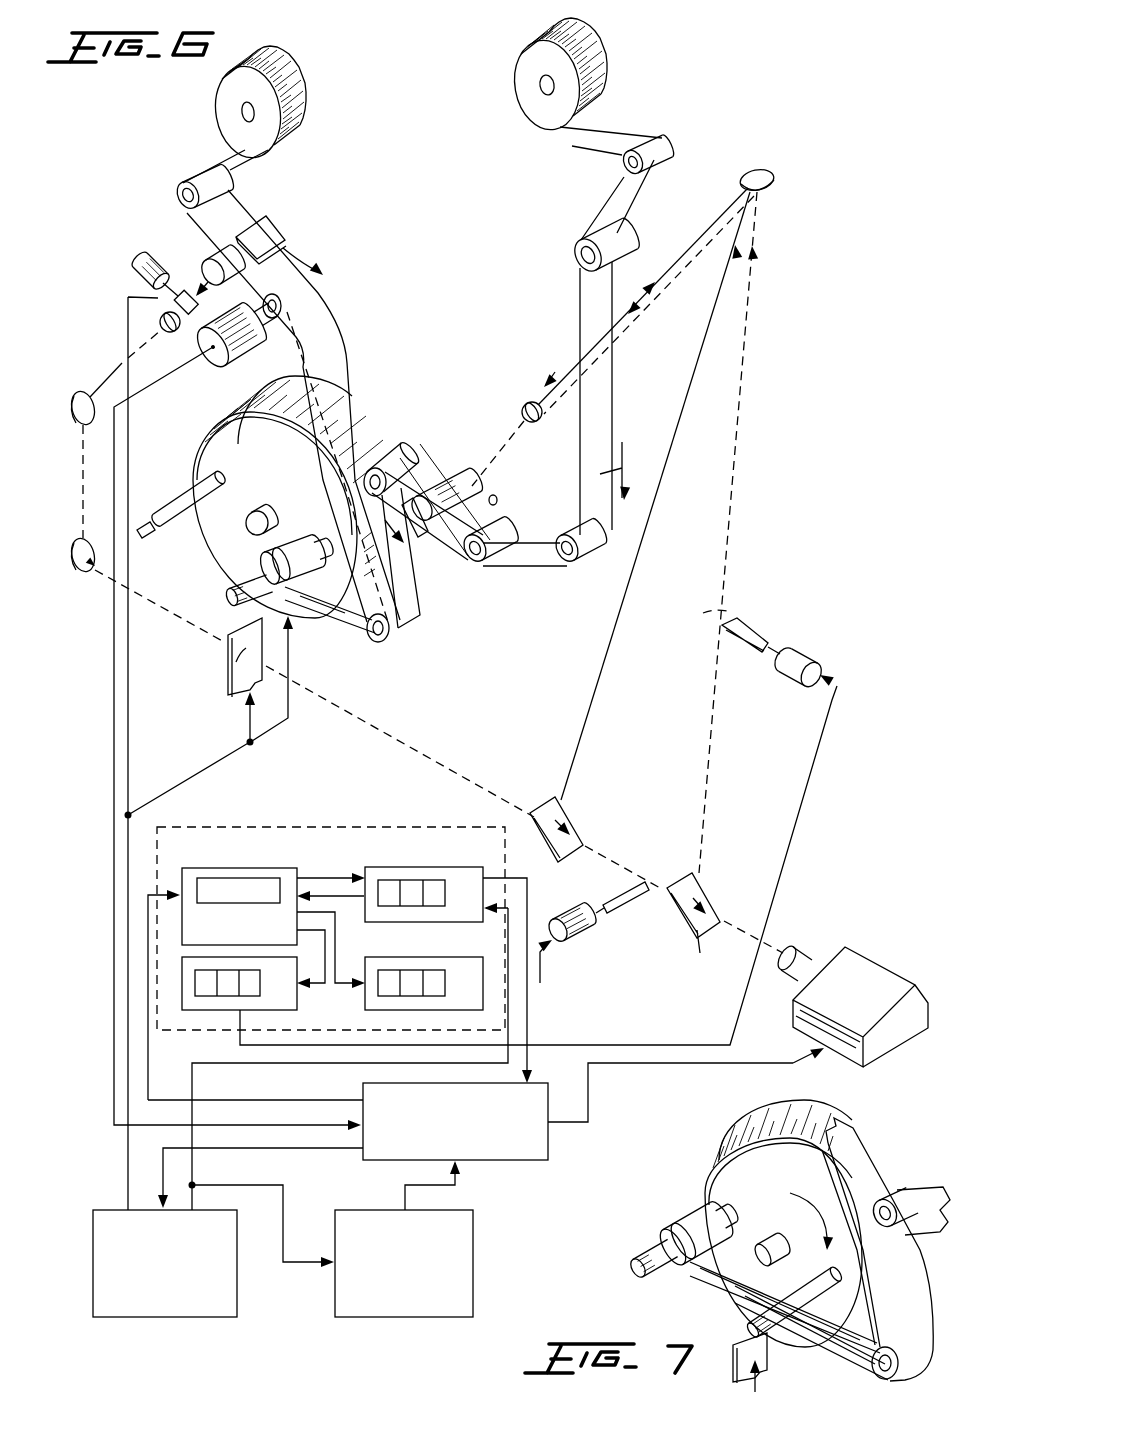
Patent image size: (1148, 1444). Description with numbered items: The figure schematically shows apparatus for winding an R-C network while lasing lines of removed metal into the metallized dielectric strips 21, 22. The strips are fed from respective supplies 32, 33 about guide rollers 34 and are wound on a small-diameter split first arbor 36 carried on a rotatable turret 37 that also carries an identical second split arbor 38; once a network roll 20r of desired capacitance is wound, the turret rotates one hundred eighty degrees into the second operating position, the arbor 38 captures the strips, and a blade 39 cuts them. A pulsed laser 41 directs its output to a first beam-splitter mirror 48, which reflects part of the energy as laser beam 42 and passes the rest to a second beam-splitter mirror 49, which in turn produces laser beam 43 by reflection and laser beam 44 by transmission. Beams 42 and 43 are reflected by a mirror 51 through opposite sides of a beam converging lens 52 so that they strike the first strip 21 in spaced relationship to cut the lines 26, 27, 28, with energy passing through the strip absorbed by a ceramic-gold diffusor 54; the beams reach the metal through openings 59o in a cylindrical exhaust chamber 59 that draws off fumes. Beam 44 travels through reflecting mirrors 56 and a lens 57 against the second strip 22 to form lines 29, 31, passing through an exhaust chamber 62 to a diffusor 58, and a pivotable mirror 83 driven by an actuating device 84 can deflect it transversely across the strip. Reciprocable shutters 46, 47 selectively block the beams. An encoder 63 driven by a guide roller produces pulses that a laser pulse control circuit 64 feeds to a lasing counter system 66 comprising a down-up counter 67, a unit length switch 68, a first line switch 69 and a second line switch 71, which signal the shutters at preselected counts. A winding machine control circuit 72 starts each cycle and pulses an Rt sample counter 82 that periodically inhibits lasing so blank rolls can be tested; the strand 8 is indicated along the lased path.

In FIG. 6, the glass strand 8 is at (477, 500).
In FIG. 6, the network roll 20r is at (297, 548).
In FIG. 7, the network roll 20r is at (688, 1221).
In FIG. 6, the metallized dielectric strip 21 is at (628, 108).
In FIG. 7, the metallized dielectric strip 21 is at (930, 1280).
In FIG. 6, the metallized dielectric strip 22 is at (198, 155).
In FIG. 7, the metallized dielectric strip 22 is at (870, 1148).
In FIG. 6, the line 26 is at (406, 451).
In FIG. 7, the line 26 is at (890, 1345).
In FIG. 6, the line 27 is at (428, 472).
In FIG. 7, the line 28 is at (728, 1272).
In FIG. 6, the line 29 is at (322, 348).
In FIG. 7, the line 29 is at (834, 1350).
In FIG. 7, the line 31 is at (690, 1276).
In FIG. 6, the supply 32 is at (590, 63).
In FIG. 6, the supply 33 is at (297, 90).
In FIG. 6, the guide rollers 34 is at (176, 196).
In FIG. 7, the guide rollers 34 is at (893, 1195).
In FIG. 6, the first arbor 36 is at (268, 575).
In FIG. 7, the first arbor 36 is at (663, 1252).
In FIG. 6, the rotatable turret 37 is at (200, 442).
In FIG. 7, the rotatable turret 37 is at (705, 1172).
In FIG. 6, the second split arbor 38 is at (178, 495).
In FIG. 7, the second split arbor 38 is at (758, 1300).
In FIG. 6, the blade 39 is at (232, 666).
In FIG. 7, the blade 39 is at (733, 1368).
In FIG. 6, the pulsed laser 41 is at (860, 966).
In FIG. 6, the laser beam 42 is at (505, 421).
In FIG. 6, the laser beam 43 is at (523, 425).
In FIG. 6, the laser beam 44 is at (118, 372).
In FIG. 6, the reciprocable shutter 46 is at (640, 893).
In FIG. 6, the reciprocable shutter 47 is at (745, 630).
In FIG. 6, the first beam-splitter mirror 48 is at (698, 955).
In FIG. 6, the second beam-splitter mirror 49 is at (570, 812).
In FIG. 6, the mirror 51 is at (770, 170).
In FIG. 6, the beam converging lens 52 is at (528, 402).
In FIG. 6, the ceramic-gold diffusor 54 is at (436, 534).
In FIG. 6, the reflecting mirrors 56 is at (79, 428).
In FIG. 6, the lens 57 is at (160, 322).
In FIG. 6, the ceramic-gold diffusor 58 is at (283, 230).
In FIG. 6, the cylindrical exhaust chamber 59 is at (480, 490).
In FIG. 6, the openings 59o is at (497, 501).
In FIG. 6, the cylindrical exhaust chamber 62 is at (203, 266).
In FIG. 6, the pulse generator or encoder 63 is at (243, 352).
In FIG. 6, the laser pulse control circuit 64 is at (512, 1156).
In FIG. 6, the lasing counter system 66 is at (335, 818).
In FIG. 6, the down-up counter 67 is at (182, 878).
In FIG. 6, the unit length switch 68 is at (484, 868).
In FIG. 6, the first line switch 69 is at (485, 990).
In FIG. 6, the second line switch 71 is at (182, 985).
In FIG. 6, the winding machine control circuit 72 is at (245, 1314).
In FIG. 6, the Rt sample counter 82 is at (475, 1239).
In FIG. 6, the pivotable mirror 83 is at (140, 293).
In FIG. 6, the actuating device 84 is at (137, 266).